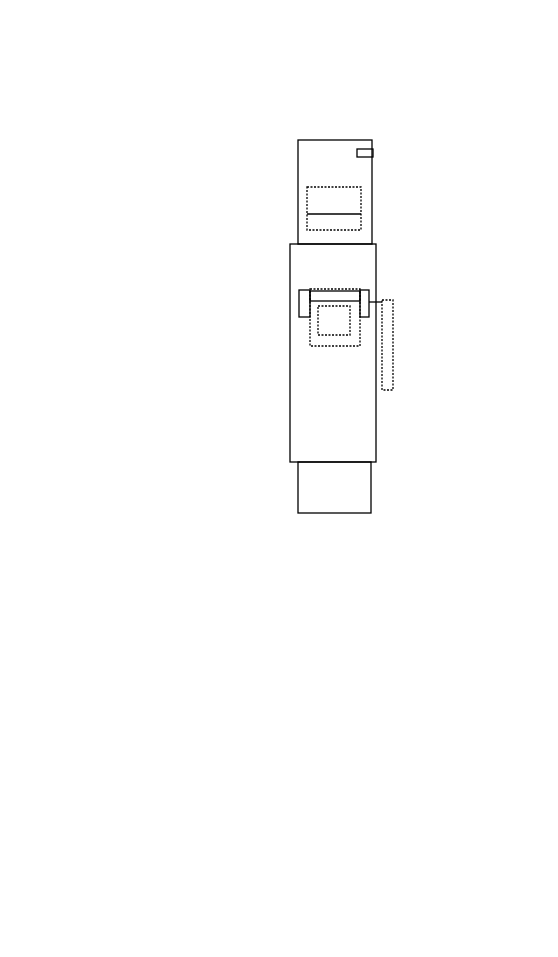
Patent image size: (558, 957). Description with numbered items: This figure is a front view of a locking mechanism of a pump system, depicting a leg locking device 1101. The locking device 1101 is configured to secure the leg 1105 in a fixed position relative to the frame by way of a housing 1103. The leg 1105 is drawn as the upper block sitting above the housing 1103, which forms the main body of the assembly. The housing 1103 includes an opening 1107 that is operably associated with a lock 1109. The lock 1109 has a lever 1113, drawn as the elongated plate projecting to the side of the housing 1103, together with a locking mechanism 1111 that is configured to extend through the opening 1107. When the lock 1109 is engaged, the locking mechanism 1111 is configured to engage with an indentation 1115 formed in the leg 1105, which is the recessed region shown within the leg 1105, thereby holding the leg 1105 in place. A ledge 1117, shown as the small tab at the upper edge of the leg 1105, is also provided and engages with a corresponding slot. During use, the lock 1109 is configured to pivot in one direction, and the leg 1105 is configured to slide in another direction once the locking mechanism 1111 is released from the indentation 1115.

The leg locking device 1101 is at (426, 97).
The housing 1103 is at (290, 262).
The leg 1105 is at (298, 172).
The opening 1107 is at (310, 335).
The lock 1109 is at (440, 353).
The locking mechanism 1111 is at (318, 317).
The lever 1113 is at (393, 330).
The indentation 1115 is at (383, 214).
The ledge 1117 is at (373, 153).